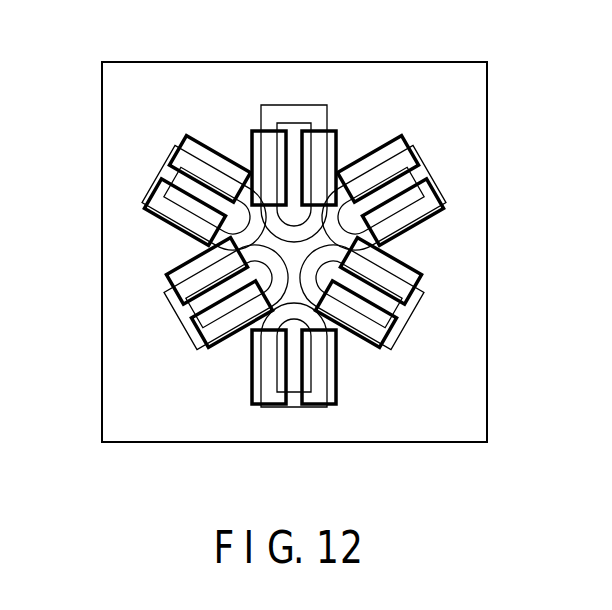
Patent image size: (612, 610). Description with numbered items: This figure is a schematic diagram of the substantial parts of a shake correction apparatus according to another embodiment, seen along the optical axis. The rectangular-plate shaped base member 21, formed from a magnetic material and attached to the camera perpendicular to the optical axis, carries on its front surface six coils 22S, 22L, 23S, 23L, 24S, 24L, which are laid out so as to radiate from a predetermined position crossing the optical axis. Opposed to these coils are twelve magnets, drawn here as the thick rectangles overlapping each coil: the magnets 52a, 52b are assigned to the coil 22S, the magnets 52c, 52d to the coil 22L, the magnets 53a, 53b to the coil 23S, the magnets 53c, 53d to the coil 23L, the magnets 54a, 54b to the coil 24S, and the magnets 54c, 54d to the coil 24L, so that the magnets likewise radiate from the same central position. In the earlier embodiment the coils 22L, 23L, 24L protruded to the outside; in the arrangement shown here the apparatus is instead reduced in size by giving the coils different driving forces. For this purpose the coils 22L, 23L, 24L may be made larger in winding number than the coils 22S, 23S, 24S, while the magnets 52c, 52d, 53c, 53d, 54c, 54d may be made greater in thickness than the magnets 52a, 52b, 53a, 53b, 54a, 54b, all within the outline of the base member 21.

The base member 21 is at (488, 395).
The coil 22L is at (295, 104).
The coil 22S is at (294, 408).
The coil 23S is at (164, 160).
The coil 23L is at (427, 322).
The coil 24S is at (443, 180).
The coil 24L is at (162, 318).
The magnet 52a is at (336, 398).
The magnet 52b is at (252, 397).
The magnet 52c is at (322, 130).
The magnet 52d is at (268, 130).
The magnet 53a is at (147, 207).
The magnet 53b is at (183, 141).
The magnet 53c is at (379, 348).
The magnet 53d is at (420, 277).
The magnet 54a is at (408, 148).
The magnet 54b is at (441, 205).
The magnet 54c is at (172, 290).
The magnet 54d is at (198, 348).